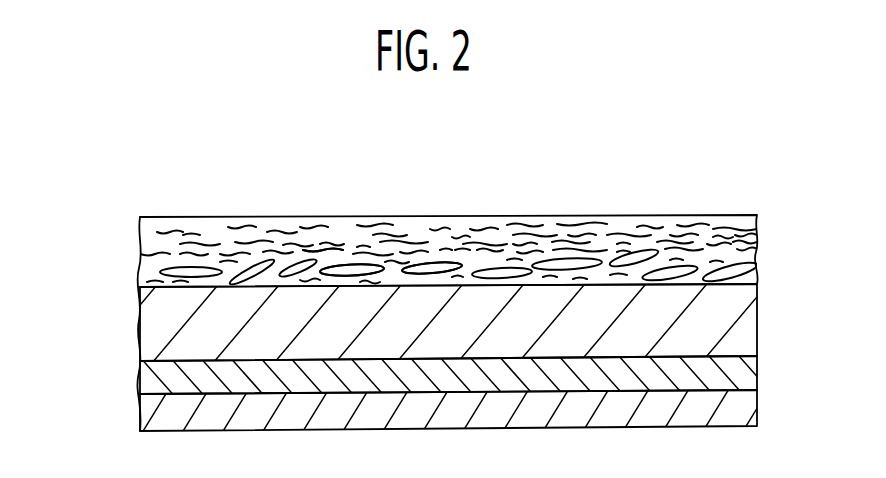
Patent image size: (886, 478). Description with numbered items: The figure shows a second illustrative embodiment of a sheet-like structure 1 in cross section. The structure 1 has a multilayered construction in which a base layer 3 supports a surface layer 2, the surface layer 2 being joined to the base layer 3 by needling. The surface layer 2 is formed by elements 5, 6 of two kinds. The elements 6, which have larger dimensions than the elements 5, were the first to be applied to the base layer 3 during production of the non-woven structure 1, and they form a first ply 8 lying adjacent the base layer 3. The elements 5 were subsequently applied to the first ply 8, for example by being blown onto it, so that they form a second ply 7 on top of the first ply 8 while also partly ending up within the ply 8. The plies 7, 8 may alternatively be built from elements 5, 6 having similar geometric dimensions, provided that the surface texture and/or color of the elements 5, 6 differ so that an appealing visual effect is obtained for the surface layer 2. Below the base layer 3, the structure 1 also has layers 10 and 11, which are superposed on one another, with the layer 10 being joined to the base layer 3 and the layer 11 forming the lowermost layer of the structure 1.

The sheet-like structure 1 is at (724, 142).
The surface layer 2 is at (740, 215).
The base layer 3 is at (735, 325).
The elements 5 is at (318, 243).
The elements 6 is at (438, 267).
The second ply 7 is at (138, 247).
The first ply 8 is at (138, 270).
The layer 10 is at (738, 372).
The layer 11 is at (737, 410).